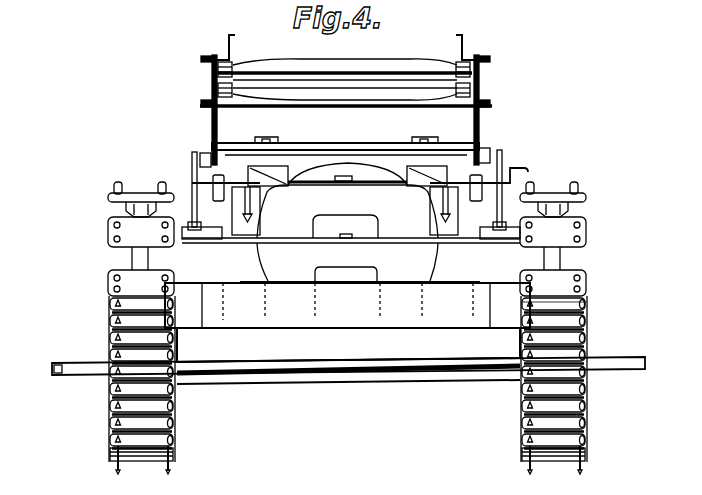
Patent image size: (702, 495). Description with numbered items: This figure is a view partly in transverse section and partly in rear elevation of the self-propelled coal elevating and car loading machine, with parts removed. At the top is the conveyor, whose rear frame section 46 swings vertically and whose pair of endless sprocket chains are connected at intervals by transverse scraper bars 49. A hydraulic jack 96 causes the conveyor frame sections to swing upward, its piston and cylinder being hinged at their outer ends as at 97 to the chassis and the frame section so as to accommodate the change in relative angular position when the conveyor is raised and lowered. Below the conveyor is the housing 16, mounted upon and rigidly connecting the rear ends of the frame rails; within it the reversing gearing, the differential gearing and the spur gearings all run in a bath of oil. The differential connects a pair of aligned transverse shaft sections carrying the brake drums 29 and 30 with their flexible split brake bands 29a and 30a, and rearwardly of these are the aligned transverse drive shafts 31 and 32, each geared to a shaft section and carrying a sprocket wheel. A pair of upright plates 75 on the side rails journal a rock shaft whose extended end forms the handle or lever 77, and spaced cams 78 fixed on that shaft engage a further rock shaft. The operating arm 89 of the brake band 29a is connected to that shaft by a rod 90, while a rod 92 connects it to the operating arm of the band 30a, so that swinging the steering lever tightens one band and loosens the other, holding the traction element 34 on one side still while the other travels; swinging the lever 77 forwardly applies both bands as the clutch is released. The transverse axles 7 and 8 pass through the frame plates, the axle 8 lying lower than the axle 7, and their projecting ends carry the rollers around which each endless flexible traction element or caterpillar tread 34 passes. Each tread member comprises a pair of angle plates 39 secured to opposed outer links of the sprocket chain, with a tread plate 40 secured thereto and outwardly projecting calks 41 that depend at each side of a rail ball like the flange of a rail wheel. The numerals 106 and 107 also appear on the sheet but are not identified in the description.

The transverse scraper bars 49 is at (372, 63).
The rear conveyor frame section 46 is at (466, 48).
The rod 92 is at (339, 143).
The hinge connections of hydraulic jacks 97 is at (487, 150).
The hydraulic jack 96 is at (418, 170).
The rod 90 is at (459, 172).
The housing 16 is at (347, 233).
The operating arm of brake band 89 is at (351, 237).
The upright plates 75 is at (194, 154).
The cams 78 is at (481, 169).
The handle or lever 77 is at (512, 168).
The angle plates 39 is at (107, 199).
The drive shaft 31 is at (469, 234).
The drive shaft 32 is at (215, 236).
The brake drum 30 is at (347, 319).
The flexible split brake band 30a is at (241, 284).
The flexible split brake band 29a is at (441, 285).
The brake drum 29 is at (465, 259).
The transverse axle 7 is at (393, 363).
The transverse axle 8 is at (270, 387).
The endless flexible traction element or caterpillar tread 34 is at (348, 393).
The tread plate 40 is at (586, 302).
The calks 41 is at (168, 462).
The numeral 106 is at (492, 492).
The numeral 107 is at (554, 492).